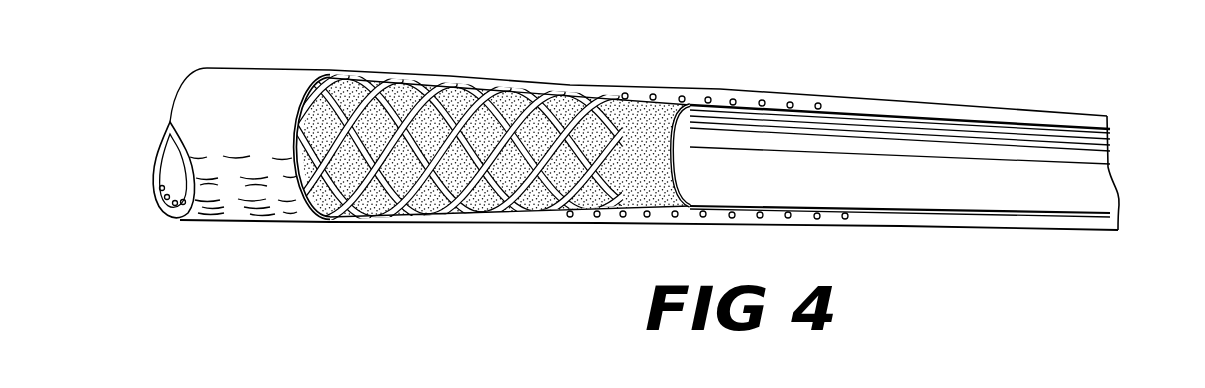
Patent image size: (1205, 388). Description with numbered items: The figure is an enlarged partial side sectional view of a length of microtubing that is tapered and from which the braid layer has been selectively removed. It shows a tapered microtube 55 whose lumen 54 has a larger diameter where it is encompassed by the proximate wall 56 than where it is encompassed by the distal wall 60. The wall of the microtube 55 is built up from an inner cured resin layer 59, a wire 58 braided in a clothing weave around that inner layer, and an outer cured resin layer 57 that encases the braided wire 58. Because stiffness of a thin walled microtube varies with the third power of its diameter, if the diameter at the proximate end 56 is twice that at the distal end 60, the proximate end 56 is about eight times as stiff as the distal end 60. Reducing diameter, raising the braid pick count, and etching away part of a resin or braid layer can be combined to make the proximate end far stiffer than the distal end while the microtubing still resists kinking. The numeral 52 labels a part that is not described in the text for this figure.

The catheter shaft 52 is at (774, 0).
The distal tip loop 54 is at (146, 178).
The outer sheath 55 is at (243, 58).
The tip loop inner wall 56 is at (170, 122).
The ring 57 is at (333, 82).
The braid 58 is at (422, 82).
The inner tube 59 is at (722, 100).
The proximal end 60 is at (1108, 117).